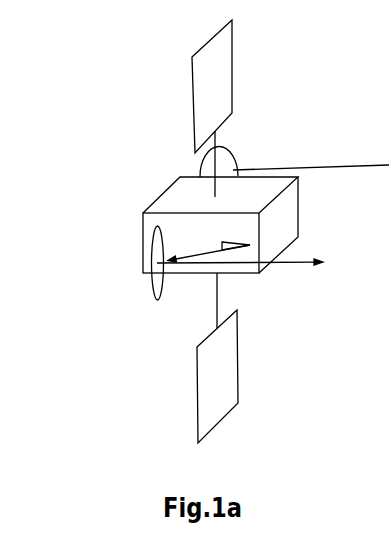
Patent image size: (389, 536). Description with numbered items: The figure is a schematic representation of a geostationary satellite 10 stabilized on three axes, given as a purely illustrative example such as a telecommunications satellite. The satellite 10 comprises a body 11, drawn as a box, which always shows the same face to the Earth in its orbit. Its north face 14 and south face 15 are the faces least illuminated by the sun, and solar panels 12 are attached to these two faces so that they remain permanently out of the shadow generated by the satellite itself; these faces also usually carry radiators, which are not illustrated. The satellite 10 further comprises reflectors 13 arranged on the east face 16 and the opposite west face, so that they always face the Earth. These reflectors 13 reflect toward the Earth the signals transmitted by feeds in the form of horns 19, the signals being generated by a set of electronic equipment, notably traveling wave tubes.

The satellite 10 is at (105, 195).
The body 11 is at (273, 177).
The solar panels 12 is at (233, 57).
The reflectors 13 is at (230, 156).
The north face 14 is at (220, 225).
The south face 15 is at (197, 277).
The east face 16 is at (209, 240).
The horns 19 is at (240, 275).